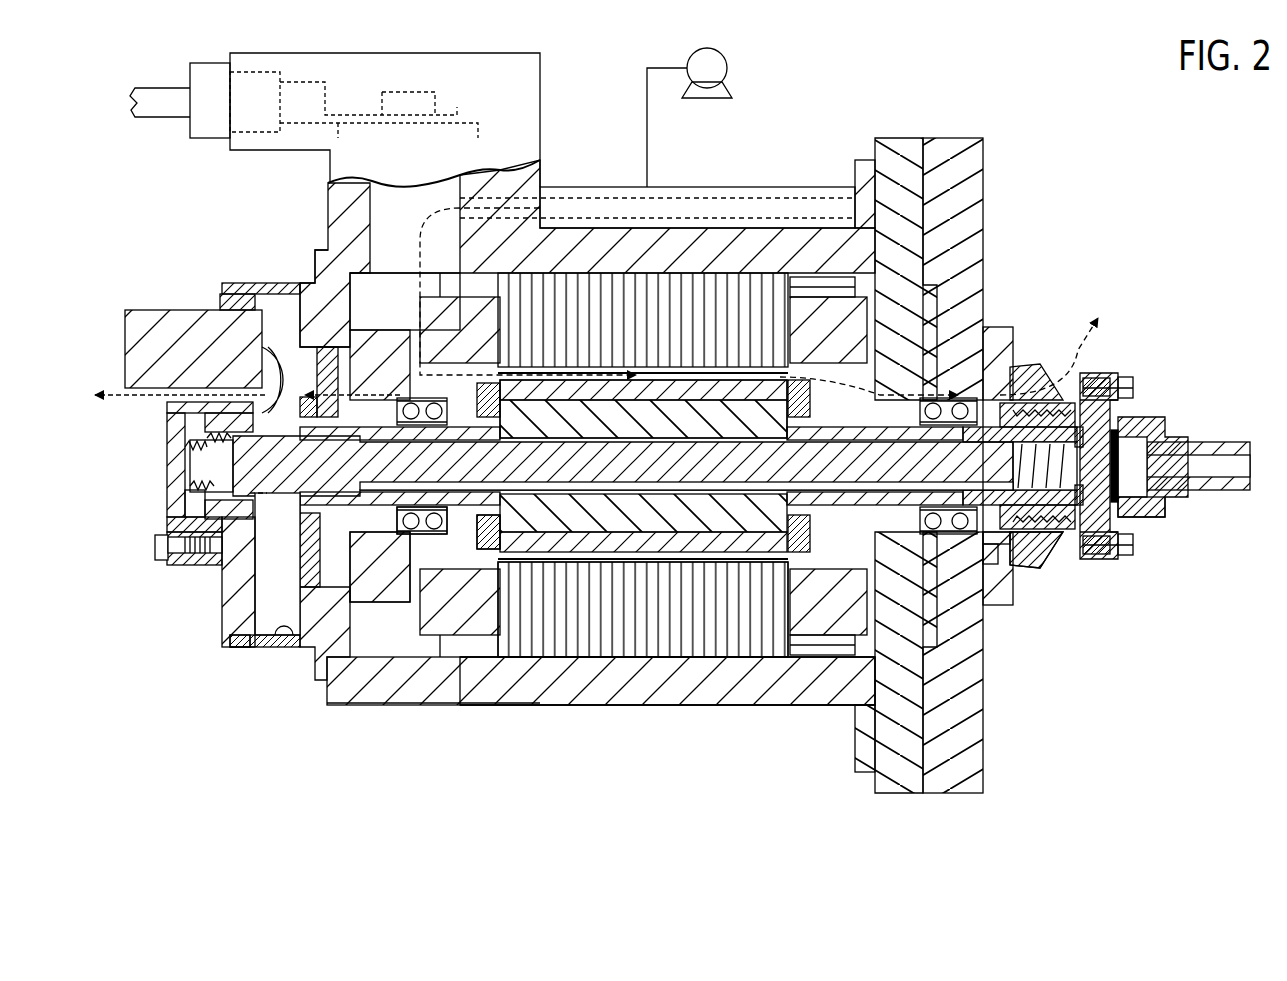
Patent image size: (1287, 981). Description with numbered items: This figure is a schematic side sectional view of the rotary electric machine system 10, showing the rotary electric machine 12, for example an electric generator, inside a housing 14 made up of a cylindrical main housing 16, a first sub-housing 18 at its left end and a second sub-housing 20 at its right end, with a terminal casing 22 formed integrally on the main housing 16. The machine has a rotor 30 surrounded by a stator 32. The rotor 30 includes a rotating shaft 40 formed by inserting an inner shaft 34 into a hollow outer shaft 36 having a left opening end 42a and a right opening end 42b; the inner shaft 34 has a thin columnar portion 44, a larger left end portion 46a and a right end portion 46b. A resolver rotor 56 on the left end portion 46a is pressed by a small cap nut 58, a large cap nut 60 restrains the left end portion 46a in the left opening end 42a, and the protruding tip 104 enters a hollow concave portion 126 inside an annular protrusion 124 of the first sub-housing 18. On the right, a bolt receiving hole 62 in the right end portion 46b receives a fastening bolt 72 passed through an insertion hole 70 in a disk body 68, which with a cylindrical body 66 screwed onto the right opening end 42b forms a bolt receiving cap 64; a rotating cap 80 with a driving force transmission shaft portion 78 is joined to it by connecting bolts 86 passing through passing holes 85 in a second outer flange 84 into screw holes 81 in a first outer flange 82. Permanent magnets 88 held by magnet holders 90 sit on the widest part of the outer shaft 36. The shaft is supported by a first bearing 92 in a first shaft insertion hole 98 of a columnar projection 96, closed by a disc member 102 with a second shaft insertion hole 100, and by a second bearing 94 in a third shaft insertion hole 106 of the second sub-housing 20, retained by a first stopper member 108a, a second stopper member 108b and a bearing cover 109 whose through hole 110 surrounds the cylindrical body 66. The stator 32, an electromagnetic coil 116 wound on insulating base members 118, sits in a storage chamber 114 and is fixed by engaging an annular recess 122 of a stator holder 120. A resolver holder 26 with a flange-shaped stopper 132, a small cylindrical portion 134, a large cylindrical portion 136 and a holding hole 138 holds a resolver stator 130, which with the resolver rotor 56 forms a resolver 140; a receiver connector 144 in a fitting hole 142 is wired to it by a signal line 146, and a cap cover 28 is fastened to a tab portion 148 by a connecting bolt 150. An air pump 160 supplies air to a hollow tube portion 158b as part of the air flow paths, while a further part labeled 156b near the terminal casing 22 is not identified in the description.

The rotary electric machine system 10 is at (1204, 123).
The rotary electric machine 12 is at (565, 662).
The housing 14 is at (508, 710).
The main housing 16 is at (518, 706).
The first sub-housing 18 is at (304, 662).
The second sub-housing 20 is at (984, 767).
The terminal casing 22 is at (528, 103).
The resolver holder 26 is at (222, 628).
The cap cover 28 is at (165, 437).
The rotor 30 is at (695, 550).
The stator 32 is at (693, 268).
The inner shaft 34 is at (590, 680).
The outer shaft 36 is at (632, 600).
The rotating shaft 40 is at (632, 768).
The left opening end 42a is at (345, 520).
The right opening end 42b is at (1155, 442).
The columnar portion 44 is at (700, 470).
The left end portion 46a is at (378, 605).
The right end portion 46b is at (1045, 548).
The resolver rotor 56 is at (256, 604).
The small cap nut 58 is at (190, 436).
The large cap nut 60 is at (303, 397).
The bolt receiving hole 62 is at (997, 326).
The bolt receiving cap 64 is at (1128, 610).
The cylindrical body 66 is at (1075, 512).
The disk body 68 is at (1114, 505).
The insertion hole 70 is at (1135, 550).
The fastening bolt 72 is at (1140, 466).
The driving force transmission shaft portion 78 is at (1222, 491).
The rotating cap 80 is at (1172, 512).
The screw holes 81 is at (1112, 392).
The first outer flange 82 is at (1095, 375).
The second outer flange 84 is at (1116, 375).
The passing holes 85 is at (1140, 396).
The connecting bolts 86 is at (1133, 382).
The permanent magnets 88 is at (740, 390).
The magnet holders 90 is at (482, 552).
The first bearing 92 is at (422, 535).
The second bearing 94 is at (922, 520).
The columnar projection 96 is at (452, 540).
The first shaft insertion hole 98 is at (440, 548).
The second shaft insertion hole 100 is at (278, 515).
The disc member 102 is at (358, 340).
The protruding tip 104 is at (205, 463).
The third shaft insertion hole 106 is at (985, 520).
The first stopper member 108a is at (998, 565).
The second stopper member 108b is at (1003, 545).
The bearing cover 109 is at (1048, 378).
The through hole 110 is at (1025, 372).
The storage chamber 114 is at (745, 300).
The electromagnetic coil 116 is at (773, 372).
The insulating base members 118 is at (822, 320).
The stator holder 120 is at (903, 150).
The annular recess 122 is at (850, 600).
The annular protrusion 124 is at (262, 285).
The hollow concave portion 126 is at (283, 640).
The resolver stator 130 is at (234, 648).
The flange-shaped stopper 132 is at (228, 284).
The small cylindrical portion 134 is at (170, 527).
The large cylindrical portion 136 is at (258, 650).
The holding hole 138 is at (190, 484).
The resolver 140 is at (193, 502).
The fitting hole 142 is at (208, 310).
The receiver connector 144 is at (124, 337).
The signal line 146 is at (283, 345).
The tab portions 148 is at (196, 556).
The connecting bolt 150 is at (154, 548).
The signal line 156b is at (455, 112).
The hollow tube portion 158b is at (600, 187).
The air pump 160 is at (728, 66).